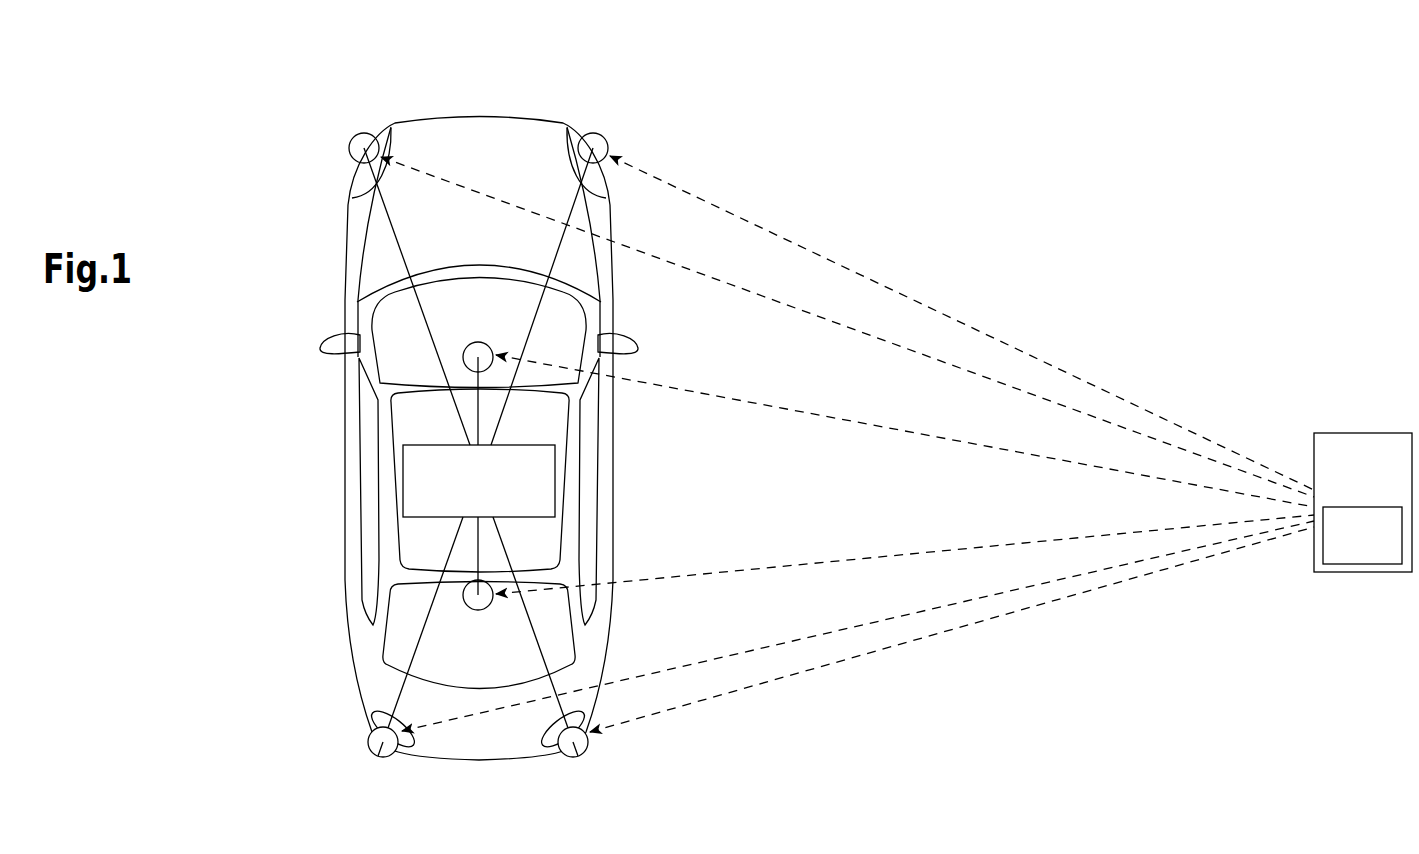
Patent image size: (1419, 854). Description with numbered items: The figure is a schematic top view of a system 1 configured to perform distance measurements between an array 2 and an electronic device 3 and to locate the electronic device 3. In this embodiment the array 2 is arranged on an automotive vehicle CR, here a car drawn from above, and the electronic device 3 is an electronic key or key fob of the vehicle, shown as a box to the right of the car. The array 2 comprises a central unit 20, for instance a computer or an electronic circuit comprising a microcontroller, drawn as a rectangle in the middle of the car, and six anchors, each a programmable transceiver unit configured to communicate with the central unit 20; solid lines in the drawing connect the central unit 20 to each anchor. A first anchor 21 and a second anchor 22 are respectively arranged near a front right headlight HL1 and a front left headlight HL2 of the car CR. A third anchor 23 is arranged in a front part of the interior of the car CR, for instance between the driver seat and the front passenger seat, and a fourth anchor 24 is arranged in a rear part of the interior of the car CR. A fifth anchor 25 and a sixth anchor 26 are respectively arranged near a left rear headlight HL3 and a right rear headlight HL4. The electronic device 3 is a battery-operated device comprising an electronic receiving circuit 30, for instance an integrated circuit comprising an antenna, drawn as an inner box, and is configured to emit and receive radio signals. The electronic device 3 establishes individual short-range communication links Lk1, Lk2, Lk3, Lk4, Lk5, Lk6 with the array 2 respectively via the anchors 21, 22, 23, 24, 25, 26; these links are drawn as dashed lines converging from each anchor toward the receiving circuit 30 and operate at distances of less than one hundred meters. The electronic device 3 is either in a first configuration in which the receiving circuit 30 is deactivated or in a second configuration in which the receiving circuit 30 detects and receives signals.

The system 1 is at (1234, 247).
The array 2 is at (690, 146).
The electronic device 3 is at (1363, 463).
The central unit 20 is at (495, 495).
The first anchor 21 is at (601, 136).
The second anchor 22 is at (351, 148).
The third anchor 23 is at (476, 343).
The fourth anchor 24 is at (476, 610).
The fifth anchor 25 is at (370, 742).
The sixth anchor 26 is at (588, 743).
The electronic receiving circuit 30 is at (1380, 550).
The front right headlight HL1 is at (596, 113).
The front left headlight HL2 is at (333, 120).
The left rear headlight HL3 is at (360, 776).
The right rear headlight HL4 is at (593, 776).
The communication link Lk1 is at (1030, 355).
The communication link Lk2 is at (847, 327).
The communication link Lk3 is at (920, 433).
The communication link Lk4 is at (843, 560).
The communication link Lk5 is at (803, 640).
The communication link Lk6 is at (957, 630).
The automotive vehicle CR is at (603, 521).